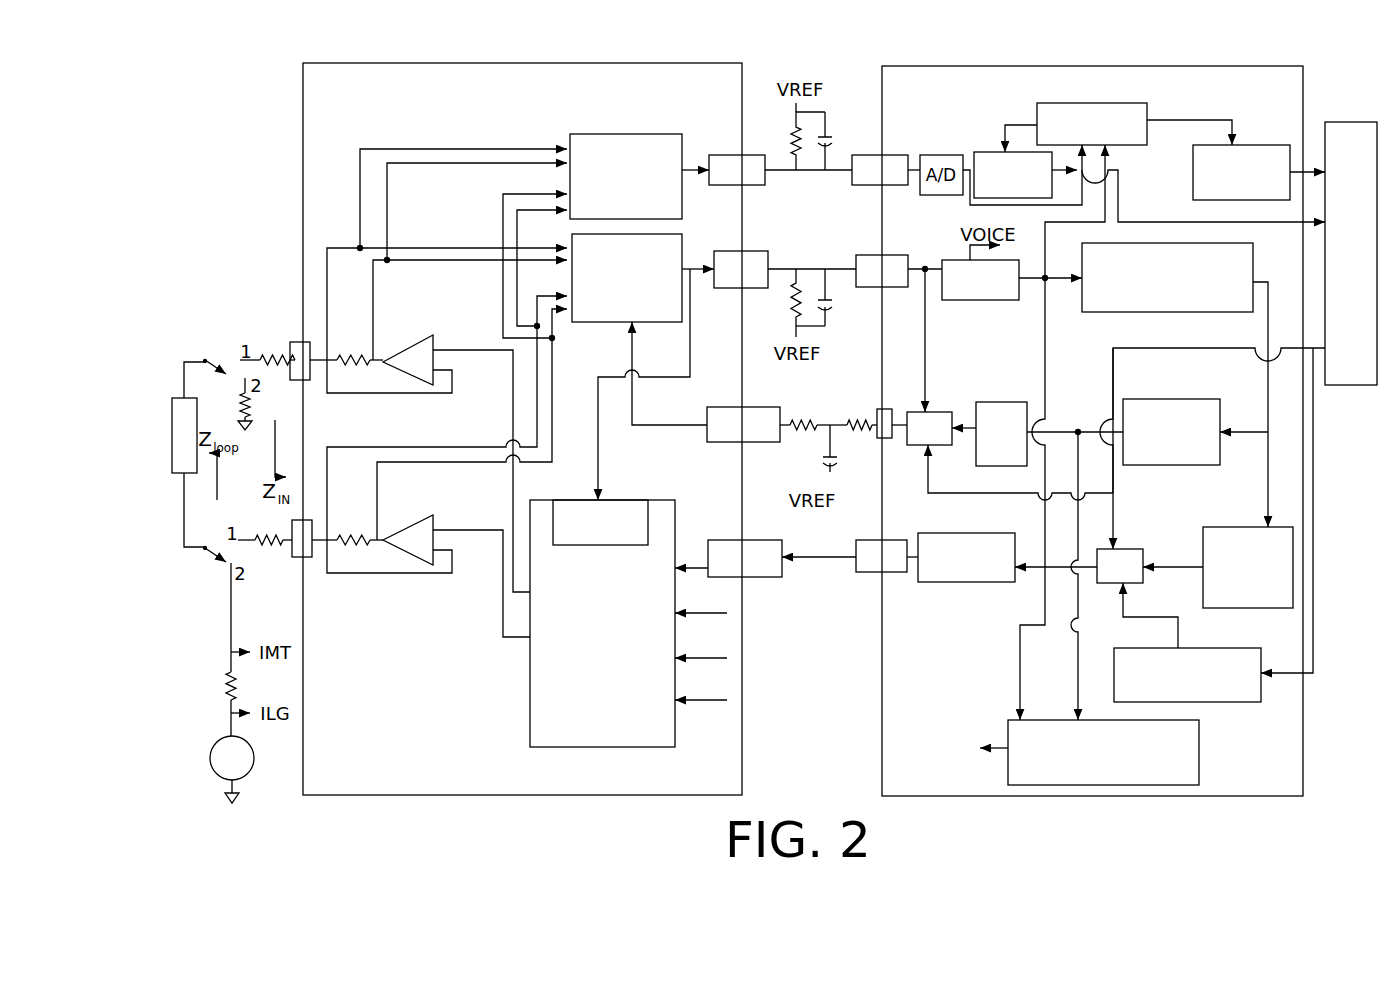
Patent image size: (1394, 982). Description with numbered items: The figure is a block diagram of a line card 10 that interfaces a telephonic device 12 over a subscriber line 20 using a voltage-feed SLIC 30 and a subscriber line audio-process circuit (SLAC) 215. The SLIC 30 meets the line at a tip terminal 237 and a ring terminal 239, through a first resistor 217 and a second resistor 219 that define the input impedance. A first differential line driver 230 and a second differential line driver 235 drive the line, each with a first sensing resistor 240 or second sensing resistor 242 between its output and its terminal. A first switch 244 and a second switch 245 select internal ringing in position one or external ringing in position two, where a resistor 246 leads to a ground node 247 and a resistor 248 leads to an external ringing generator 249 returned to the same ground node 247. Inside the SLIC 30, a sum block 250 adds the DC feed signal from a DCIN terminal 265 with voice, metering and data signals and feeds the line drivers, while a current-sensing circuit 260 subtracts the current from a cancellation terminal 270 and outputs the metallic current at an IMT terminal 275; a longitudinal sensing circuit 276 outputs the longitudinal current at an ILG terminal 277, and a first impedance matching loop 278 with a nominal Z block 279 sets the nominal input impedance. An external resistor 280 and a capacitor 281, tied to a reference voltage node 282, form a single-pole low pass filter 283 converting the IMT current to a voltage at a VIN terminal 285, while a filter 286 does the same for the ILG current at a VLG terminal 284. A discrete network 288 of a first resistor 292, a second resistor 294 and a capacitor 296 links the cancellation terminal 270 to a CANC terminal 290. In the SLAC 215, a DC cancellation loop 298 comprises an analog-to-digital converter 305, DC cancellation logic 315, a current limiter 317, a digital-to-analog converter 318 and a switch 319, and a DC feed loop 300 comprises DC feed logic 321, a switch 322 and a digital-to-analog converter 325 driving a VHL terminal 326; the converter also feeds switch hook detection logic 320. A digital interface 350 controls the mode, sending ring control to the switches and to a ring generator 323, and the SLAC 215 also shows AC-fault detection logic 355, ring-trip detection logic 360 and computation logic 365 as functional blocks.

The line card 10 is at (1165, 819).
The telephonic device 12 is at (182, 398).
The subscriber line 20 is at (200, 362).
The SLIC 30 is at (507, 800).
The subscriber line audio-process circuit (SLAC) 215 is at (1060, 800).
The first resistor 217 is at (272, 353).
The second resistor 219 is at (274, 548).
The first differential line driver 230 is at (434, 342).
The second differential line driver 235 is at (431, 519).
The tip terminal 237 is at (305, 342).
The ring terminal 239 is at (312, 557).
The first sensing resistor 240 is at (355, 353).
The second sensing resistor 242 is at (357, 540).
The first switch 244 is at (210, 357).
The second switch 245 is at (205, 549).
The resistor 246 is at (252, 397).
The ground node 247 is at (246, 430).
The resistor 248 is at (225, 675).
The external ringing generator 249 is at (253, 772).
The sum block 250 is at (529, 650).
The current-sensing circuit 260 is at (606, 322).
The DCIN terminal 265 is at (757, 578).
The cancellation terminal (CANC) 270 is at (730, 444).
The IMT terminal 275 is at (755, 250).
The longitudinal sensing circuit 276 is at (605, 133).
The ILG terminal 277 is at (738, 155).
The first impedance matching loop 278 is at (600, 435).
The nominal Z block 279 is at (556, 506).
The external resistor 280 is at (790, 288).
The capacitor 281 is at (835, 311).
The reference voltage node 282 is at (826, 88).
The single-pole low pass filter 283 is at (805, 262).
The VLG terminal 284 is at (900, 154).
The VIN terminal 285 is at (877, 255).
The filter 286 is at (786, 128).
The discrete network 288 is at (794, 449).
The CANC terminal 290 is at (882, 404).
The first resistor 292 is at (809, 421).
The second resistor 294 is at (860, 432).
The capacitor 296 is at (838, 464).
The DC cancellation loop 298 is at (1261, 328).
The DC feed loop 300 is at (1170, 556).
The analog-to-digital converter 305 is at (1005, 299).
The DC cancellation logic 315 is at (1128, 313).
The current limiter 317 is at (1152, 466).
The digital-to-analog converter 318 is at (993, 401).
The switch 319 is at (938, 409).
The switch hook detection logic 320 is at (1008, 760).
The DC feed logic 321 is at (1220, 608).
The switch 322 is at (1120, 548).
The ring generator 323 is at (1213, 702).
The digital-to-analog converter 325 is at (962, 583).
The VHL terminal 326 is at (873, 572).
The digital interface 350 is at (1374, 121).
The AC-fault detection logic 355 is at (992, 152).
The ring-trip detection logic 360 is at (1192, 156).
The computation logic 365 is at (1037, 113).